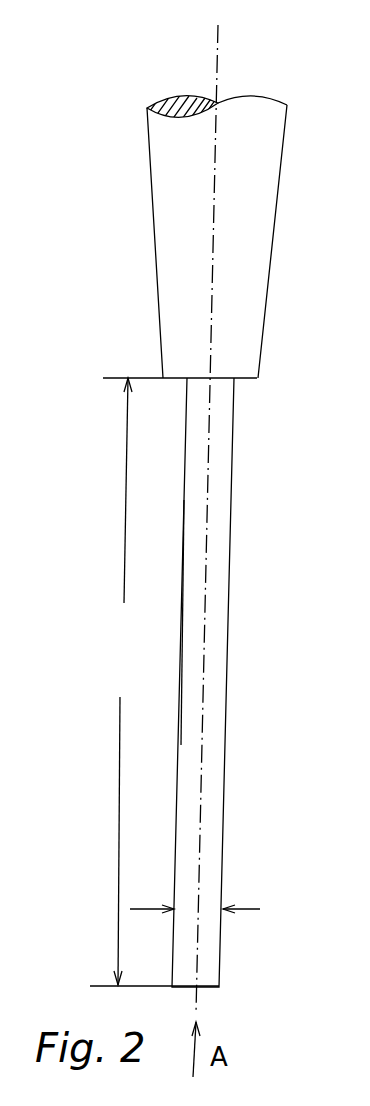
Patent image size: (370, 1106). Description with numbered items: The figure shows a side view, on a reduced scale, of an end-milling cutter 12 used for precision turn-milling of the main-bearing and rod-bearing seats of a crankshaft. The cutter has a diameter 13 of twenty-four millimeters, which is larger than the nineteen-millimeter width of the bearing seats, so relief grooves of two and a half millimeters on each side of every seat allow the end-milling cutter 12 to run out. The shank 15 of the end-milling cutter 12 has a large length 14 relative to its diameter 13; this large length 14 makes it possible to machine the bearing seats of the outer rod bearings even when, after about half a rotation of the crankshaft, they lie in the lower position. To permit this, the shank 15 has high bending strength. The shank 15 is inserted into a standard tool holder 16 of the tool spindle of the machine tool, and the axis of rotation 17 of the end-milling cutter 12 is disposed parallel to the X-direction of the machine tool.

The end-milling cutter 12 is at (238, 592).
The diameter 13 is at (214, 912).
The length 14 is at (123, 681).
The shank 15 is at (215, 745).
The tool holder 16 is at (263, 229).
The axis of rotation 17 is at (218, 60).